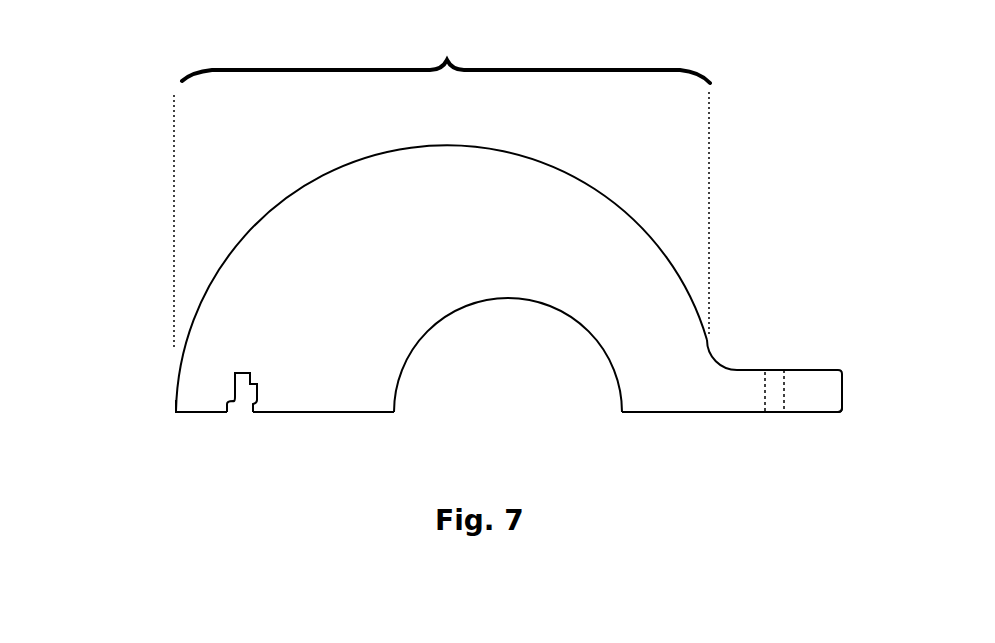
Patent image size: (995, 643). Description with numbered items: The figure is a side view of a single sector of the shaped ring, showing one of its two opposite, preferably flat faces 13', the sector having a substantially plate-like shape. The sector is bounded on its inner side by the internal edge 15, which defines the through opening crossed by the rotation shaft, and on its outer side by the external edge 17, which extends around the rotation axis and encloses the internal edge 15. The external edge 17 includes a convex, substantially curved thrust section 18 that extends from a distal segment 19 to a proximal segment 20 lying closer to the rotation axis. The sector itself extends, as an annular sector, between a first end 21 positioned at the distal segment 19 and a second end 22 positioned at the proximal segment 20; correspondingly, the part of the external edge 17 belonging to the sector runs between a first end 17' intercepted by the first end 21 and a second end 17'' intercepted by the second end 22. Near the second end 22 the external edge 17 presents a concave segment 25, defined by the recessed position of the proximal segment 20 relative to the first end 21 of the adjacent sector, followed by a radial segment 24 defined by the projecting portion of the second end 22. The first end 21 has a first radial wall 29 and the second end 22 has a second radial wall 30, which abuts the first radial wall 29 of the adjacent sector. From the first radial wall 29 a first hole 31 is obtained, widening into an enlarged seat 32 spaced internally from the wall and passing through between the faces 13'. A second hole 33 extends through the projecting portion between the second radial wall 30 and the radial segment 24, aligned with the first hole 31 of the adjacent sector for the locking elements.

The faces 13' is at (503, 296).
The internal edge 15 is at (496, 299).
The external edge 17 is at (441, 253).
The first end of the external edge 17' is at (125, 424).
The second end of the external edge 17'' is at (890, 416).
The thrust section 18 is at (446, 54).
The distal segment 19 is at (198, 242).
The proximal segment 20 is at (694, 255).
The first end of the sector 21 is at (199, 441).
The second end of the sector 22 is at (776, 443).
The radial segment 24 is at (800, 370).
The concave segment 25 is at (747, 331).
The first radial wall 29 is at (314, 413).
The second radial wall 30 is at (711, 413).
The first hole 31 is at (240, 424).
The enlarged seat 32 is at (221, 385).
The second hole 33 is at (790, 403).